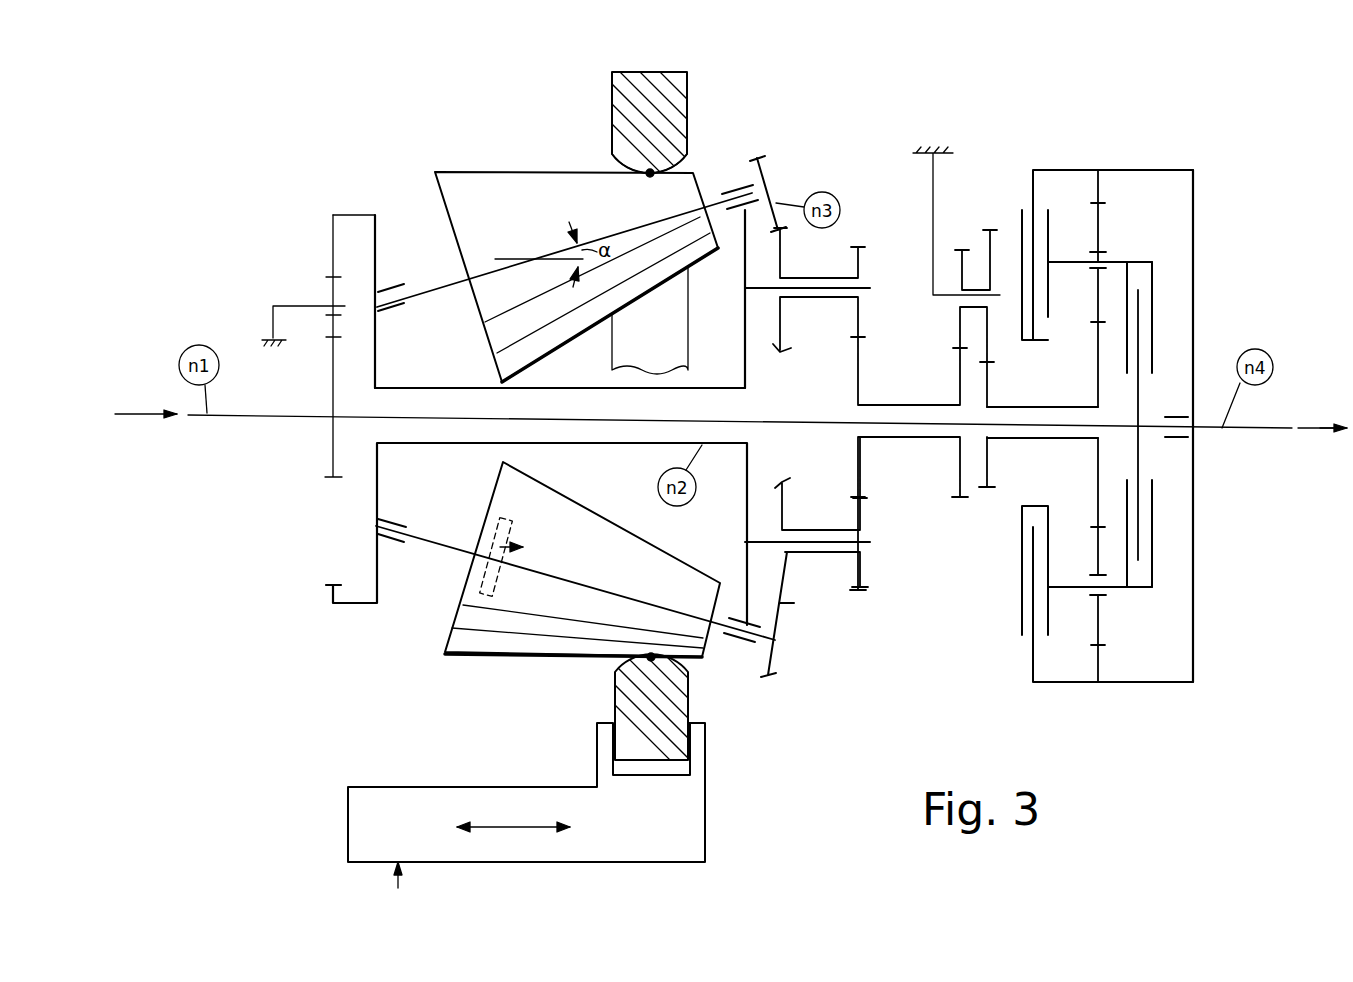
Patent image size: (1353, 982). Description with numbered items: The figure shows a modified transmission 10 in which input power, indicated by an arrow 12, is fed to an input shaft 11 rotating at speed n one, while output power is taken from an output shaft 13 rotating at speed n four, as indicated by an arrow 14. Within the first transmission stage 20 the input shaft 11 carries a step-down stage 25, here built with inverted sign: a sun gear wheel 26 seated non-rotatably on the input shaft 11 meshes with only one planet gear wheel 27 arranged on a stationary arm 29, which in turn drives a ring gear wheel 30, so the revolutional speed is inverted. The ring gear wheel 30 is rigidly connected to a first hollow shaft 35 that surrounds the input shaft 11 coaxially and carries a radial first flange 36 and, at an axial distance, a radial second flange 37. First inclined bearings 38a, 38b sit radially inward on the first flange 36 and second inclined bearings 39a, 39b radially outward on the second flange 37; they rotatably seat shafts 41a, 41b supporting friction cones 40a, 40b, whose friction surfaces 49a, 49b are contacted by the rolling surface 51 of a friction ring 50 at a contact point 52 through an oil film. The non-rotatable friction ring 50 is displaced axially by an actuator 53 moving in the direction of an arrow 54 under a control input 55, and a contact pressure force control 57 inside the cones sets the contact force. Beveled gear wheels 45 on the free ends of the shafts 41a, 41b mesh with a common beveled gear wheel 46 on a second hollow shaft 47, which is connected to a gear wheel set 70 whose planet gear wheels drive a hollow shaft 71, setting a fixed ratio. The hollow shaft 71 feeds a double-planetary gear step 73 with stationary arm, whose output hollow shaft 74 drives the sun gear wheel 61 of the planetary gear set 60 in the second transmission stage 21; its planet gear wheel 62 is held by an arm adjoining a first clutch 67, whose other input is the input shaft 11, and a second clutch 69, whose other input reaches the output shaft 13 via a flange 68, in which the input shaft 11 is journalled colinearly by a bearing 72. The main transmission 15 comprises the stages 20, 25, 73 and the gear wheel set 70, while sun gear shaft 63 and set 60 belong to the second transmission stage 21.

The transmission 10 is at (1217, 170).
The input shaft 11 is at (233, 420).
The arrow 12 is at (133, 420).
The output shaft 13 is at (1252, 428).
The arrow 14 is at (1313, 430).
The main transmission 15 is at (287, 163).
The first transmission stage 20 is at (393, 165).
The second transmission stage 21 is at (1058, 155).
The step-down stage 25 is at (297, 250).
The sun gear wheel 26 is at (330, 392).
The first planet gear wheel 27 is at (332, 325).
The stationary arm 29 is at (283, 305).
The ring gear wheel 30 is at (345, 215).
The first hollow shaft 35 is at (457, 388).
The first flange 36 is at (378, 250).
The second flange 37 is at (740, 262).
The first inclined bearing 38a is at (397, 305).
The first inclined bearing 38b is at (397, 523).
The second inclined bearing 39a is at (730, 200).
The second inclined bearing 39b is at (738, 642).
The friction cone 40a is at (490, 207).
The friction cone 40b is at (483, 655).
The shaft 41a is at (443, 273).
The shaft 41b is at (432, 550).
The beveled gear wheel 45 is at (772, 190).
The beveled gear wheel 46 is at (783, 263).
The second hollow shaft 47 is at (820, 303).
The friction surface 49a is at (532, 170).
The friction surface 49b is at (560, 657).
The friction ring 50 is at (697, 93).
The rolling surface 51 is at (605, 150).
The contact point 52 is at (647, 176).
The actuator 53 is at (705, 812).
The arrow 54 is at (508, 827).
The control input 55 is at (405, 878).
The contact pressure force control 57 is at (512, 535).
The planetary gear set 60 is at (1103, 237).
The sun gear wheel 61 is at (1097, 397).
The planet gear wheel 62 is at (1097, 283).
The sun gear 63 is at (1092, 198).
The first clutch 67 is at (1152, 315).
The flange 68 is at (1193, 248).
The second clutch 69 is at (1022, 227).
The gear wheel set 70 is at (863, 233).
The hollow shaft 71 is at (925, 405).
The bearing 72 is at (1180, 437).
The gear step 73 is at (983, 505).
The hollow shaft 74 is at (1013, 407).